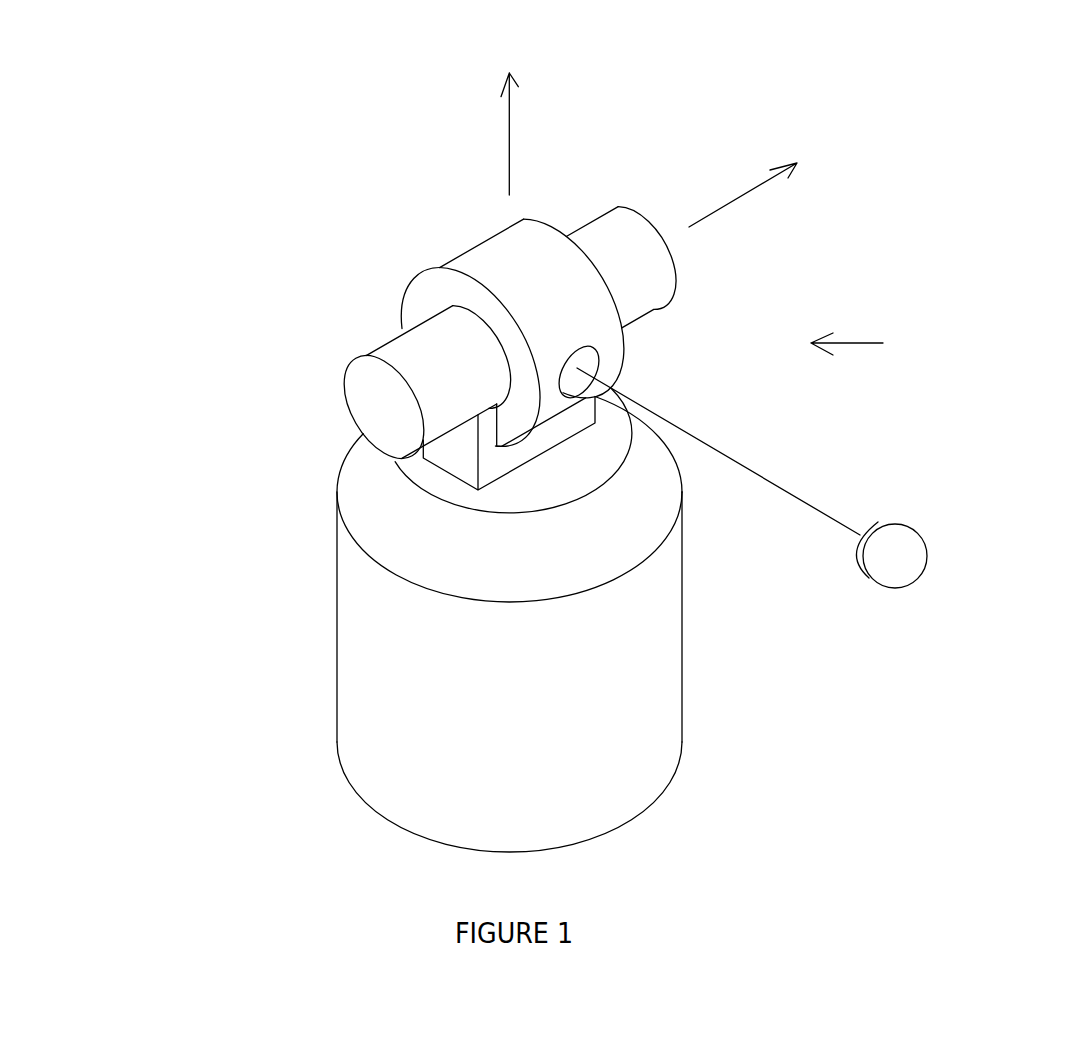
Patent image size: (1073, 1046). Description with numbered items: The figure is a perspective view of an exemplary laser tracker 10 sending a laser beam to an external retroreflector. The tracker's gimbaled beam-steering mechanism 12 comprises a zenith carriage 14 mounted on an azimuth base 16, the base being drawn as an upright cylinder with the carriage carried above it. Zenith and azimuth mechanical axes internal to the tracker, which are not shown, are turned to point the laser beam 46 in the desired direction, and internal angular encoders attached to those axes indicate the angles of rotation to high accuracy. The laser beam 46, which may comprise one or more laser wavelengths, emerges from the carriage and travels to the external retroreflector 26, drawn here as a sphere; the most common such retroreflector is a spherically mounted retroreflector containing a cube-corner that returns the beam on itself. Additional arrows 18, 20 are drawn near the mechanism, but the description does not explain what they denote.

The laser tracker 10 is at (626, 443).
The gimbaled beam-steering mechanism 12 is at (868, 341).
The zenith carriage 14 is at (345, 403).
The azimuth base 16 is at (337, 515).
The rear shaft / axial direction 18 is at (699, 232).
The upward direction arrow 20 is at (509, 114).
The external retroreflector 26 is at (881, 518).
The laser beam 46 is at (735, 465).